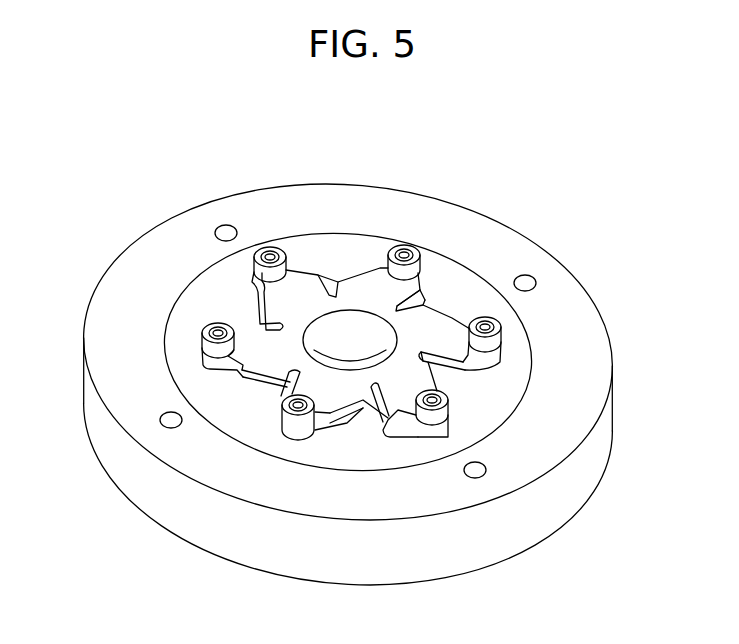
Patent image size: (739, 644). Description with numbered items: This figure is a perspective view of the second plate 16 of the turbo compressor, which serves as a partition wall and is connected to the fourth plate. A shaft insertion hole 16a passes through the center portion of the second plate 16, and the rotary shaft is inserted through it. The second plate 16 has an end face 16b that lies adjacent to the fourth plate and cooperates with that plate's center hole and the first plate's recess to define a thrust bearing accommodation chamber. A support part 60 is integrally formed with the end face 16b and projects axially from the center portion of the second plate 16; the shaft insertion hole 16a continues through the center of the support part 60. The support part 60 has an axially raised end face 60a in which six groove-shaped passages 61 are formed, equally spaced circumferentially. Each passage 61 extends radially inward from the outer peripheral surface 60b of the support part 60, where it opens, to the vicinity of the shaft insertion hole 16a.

The second plate 16 is at (510, 216).
The shaft insertion hole 16a is at (312, 339).
The end face 16b is at (548, 300).
The support part 60 is at (372, 378).
The end face of the support part 60a is at (420, 297).
The outer peripheral surface of the support part 60b is at (440, 373).
The passage 61 is at (321, 281).